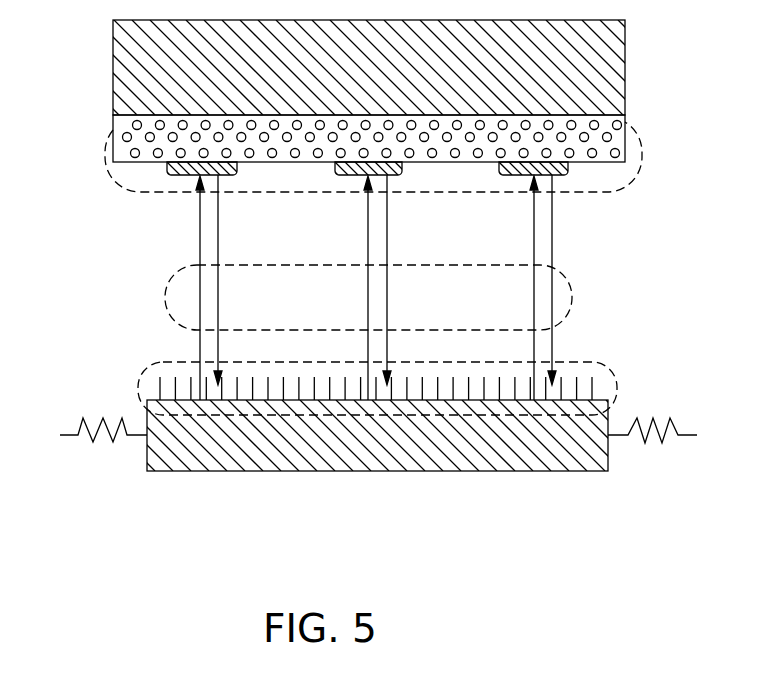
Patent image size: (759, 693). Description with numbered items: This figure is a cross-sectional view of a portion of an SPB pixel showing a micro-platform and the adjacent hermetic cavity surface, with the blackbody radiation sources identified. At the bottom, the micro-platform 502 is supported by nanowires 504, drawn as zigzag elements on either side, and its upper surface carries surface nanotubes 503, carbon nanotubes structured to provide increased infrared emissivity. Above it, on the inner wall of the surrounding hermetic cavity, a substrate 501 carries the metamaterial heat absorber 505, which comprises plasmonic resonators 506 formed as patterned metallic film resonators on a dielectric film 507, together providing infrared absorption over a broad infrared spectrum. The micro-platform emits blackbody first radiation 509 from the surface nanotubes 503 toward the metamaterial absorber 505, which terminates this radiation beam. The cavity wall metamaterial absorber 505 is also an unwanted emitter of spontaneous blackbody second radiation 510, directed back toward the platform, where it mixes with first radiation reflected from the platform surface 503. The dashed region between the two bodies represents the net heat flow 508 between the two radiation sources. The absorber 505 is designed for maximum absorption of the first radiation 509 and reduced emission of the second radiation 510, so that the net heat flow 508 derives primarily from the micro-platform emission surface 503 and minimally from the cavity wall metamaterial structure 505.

The substrate 501 is at (105, 20).
The micro-platform 502 is at (542, 472).
The surface nanotubes 503 is at (603, 363).
The nanowires 504 is at (98, 428).
The metamaterial heat absorber 505 is at (113, 167).
The plasmonic resonators 506 is at (625, 78).
The dielectric film 507 is at (603, 163).
The net heat flow 508 is at (572, 297).
The first radiation 509 is at (200, 232).
The second radiation 510 is at (552, 240).